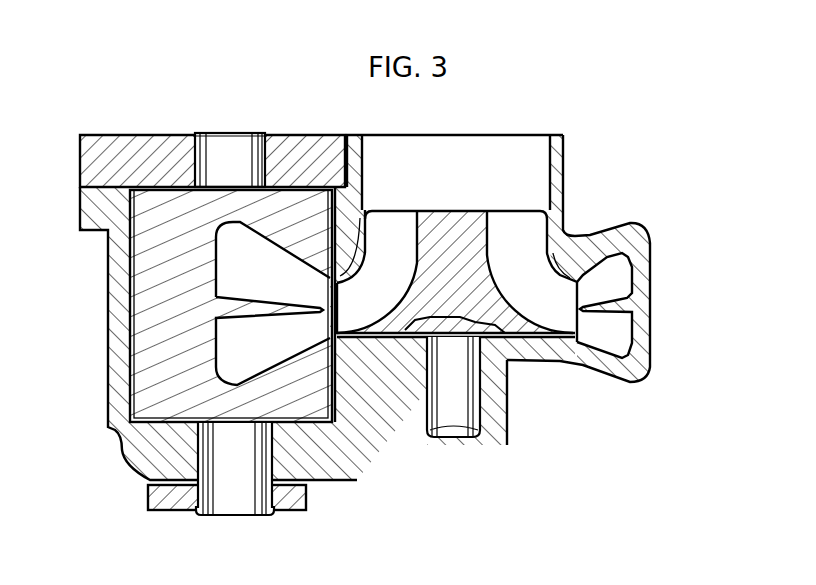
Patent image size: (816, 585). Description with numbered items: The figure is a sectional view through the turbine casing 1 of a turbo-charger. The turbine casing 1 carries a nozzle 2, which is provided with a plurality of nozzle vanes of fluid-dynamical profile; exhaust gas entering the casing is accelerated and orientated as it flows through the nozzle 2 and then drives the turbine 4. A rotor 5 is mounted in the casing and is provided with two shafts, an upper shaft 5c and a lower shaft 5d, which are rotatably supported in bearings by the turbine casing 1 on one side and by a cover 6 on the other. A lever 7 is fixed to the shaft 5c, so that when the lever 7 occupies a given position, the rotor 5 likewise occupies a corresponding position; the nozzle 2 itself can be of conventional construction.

The turbine casing 1 is at (558, 166).
The nozzle 2 is at (612, 280).
The turbine 4 is at (511, 226).
The rotor 5 is at (147, 333).
The shaft 5c is at (255, 143).
The shaft 5d is at (230, 498).
The cover 6 is at (137, 146).
The lever 7 is at (164, 507).